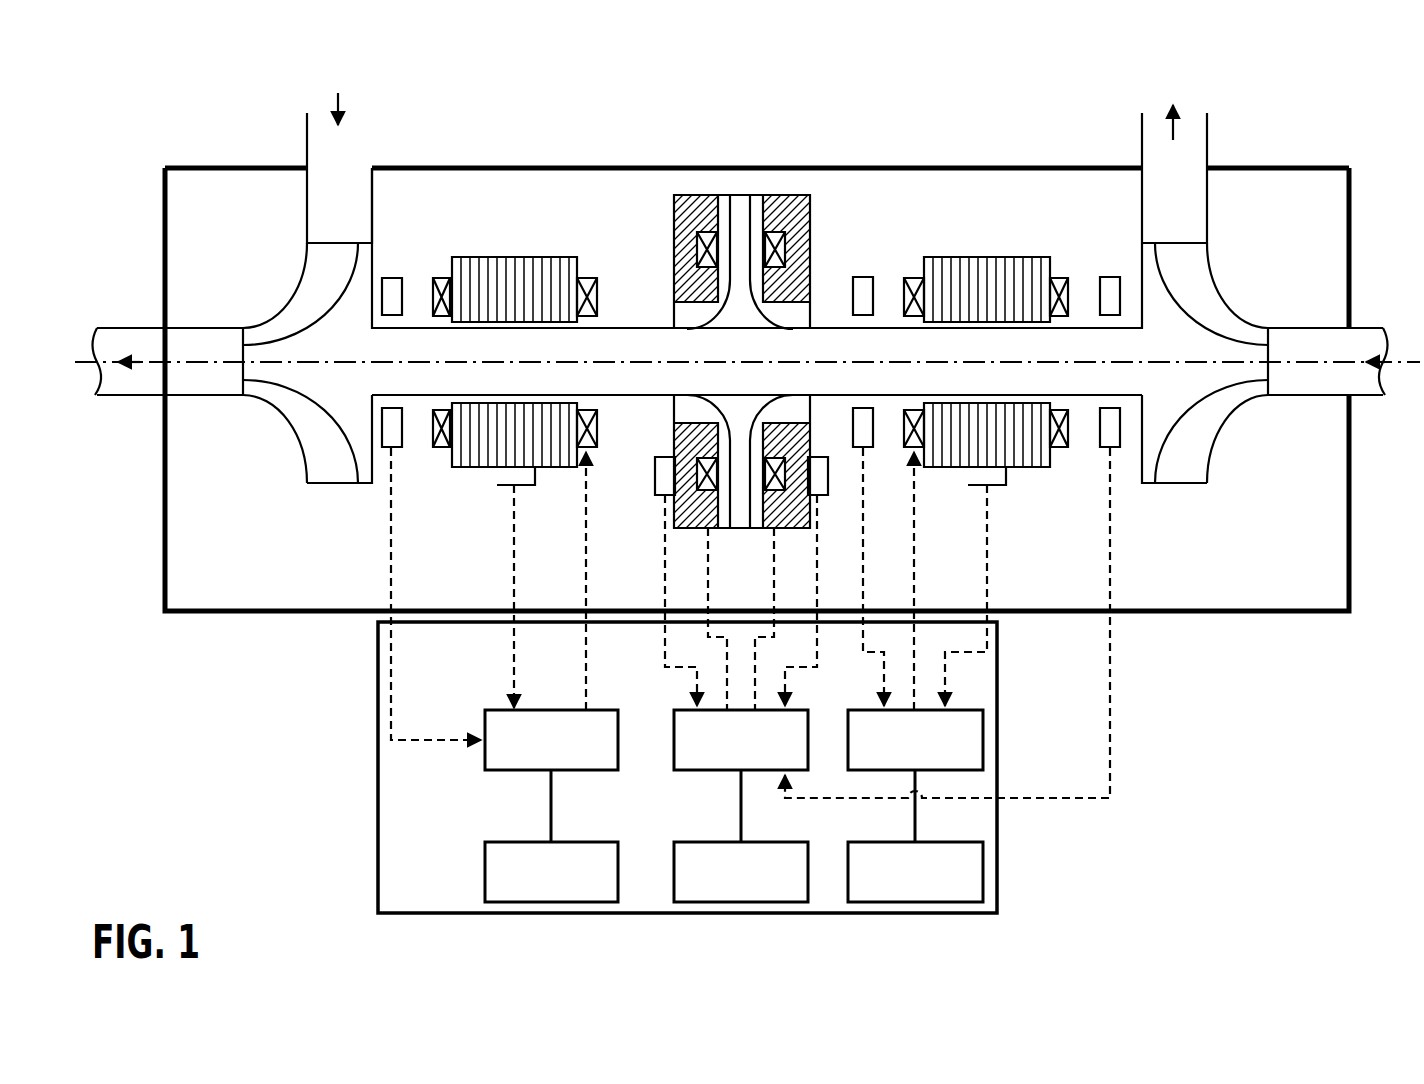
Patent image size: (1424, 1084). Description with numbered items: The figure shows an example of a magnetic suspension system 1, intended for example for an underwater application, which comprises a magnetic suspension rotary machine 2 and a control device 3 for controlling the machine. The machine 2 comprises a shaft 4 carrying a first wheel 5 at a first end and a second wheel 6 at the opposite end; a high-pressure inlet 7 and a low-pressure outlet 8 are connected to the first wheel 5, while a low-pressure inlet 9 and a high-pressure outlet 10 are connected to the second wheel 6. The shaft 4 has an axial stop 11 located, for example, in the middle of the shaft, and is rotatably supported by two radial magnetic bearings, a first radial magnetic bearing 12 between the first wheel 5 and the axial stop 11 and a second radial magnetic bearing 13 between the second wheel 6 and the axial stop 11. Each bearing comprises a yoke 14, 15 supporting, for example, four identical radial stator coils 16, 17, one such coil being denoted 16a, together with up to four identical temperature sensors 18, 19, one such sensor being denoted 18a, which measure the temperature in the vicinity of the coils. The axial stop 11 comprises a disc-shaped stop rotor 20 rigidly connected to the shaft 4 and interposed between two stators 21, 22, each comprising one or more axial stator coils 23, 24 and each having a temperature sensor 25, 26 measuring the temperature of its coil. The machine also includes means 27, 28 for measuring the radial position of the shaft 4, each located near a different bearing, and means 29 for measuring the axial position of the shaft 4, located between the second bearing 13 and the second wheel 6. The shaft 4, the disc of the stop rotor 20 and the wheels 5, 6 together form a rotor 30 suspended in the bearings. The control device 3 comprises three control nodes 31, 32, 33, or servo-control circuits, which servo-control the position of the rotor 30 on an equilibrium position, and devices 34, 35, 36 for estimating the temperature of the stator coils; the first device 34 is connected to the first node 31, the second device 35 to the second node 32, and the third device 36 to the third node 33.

The magnetic suspension system 1 is at (1368, 118).
The magnetic suspension rotary machine 2 is at (497, 163).
The control device 3 is at (371, 742).
The shaft 4 is at (619, 325).
The first wheel 5 is at (267, 286).
The second wheel 6 is at (1241, 286).
The high-pressure inlet 7 is at (303, 139).
The low-pressure outlet 8 is at (130, 324).
The low-pressure inlet 9 is at (1364, 324).
The high-pressure outlet 10 is at (1214, 132).
The axial stop 11 is at (745, 176).
The first radial magnetic bearing 12 is at (514, 441).
The second radial magnetic bearing 13 is at (995, 364).
The yoke 14 is at (508, 253).
The yoke 15 is at (963, 253).
The radial stator coils 16 is at (588, 275).
The coil 16a is at (441, 276).
The radial stator coils 17 is at (1061, 275).
The temperature sensors 18 is at (500, 486).
The sensor 18a is at (522, 486).
The temperature sensors 19 is at (996, 487).
The stop rotor 20 is at (742, 532).
The stator 21 is at (693, 192).
The stator 22 is at (789, 192).
The axial stator coils 23 is at (705, 494).
The axial stator coils 24 is at (777, 494).
The temperature sensor 25 is at (652, 479).
The temperature sensor 26 is at (831, 479).
The means for measuring the radial position 27 is at (392, 276).
The means for measuring the radial position 28 is at (863, 276).
The means for measuring the axial position 29 is at (1097, 441).
The rotor 30 is at (1220, 490).
The first control node 31 is at (490, 710).
The second control node 32 is at (862, 710).
The third control node 33 is at (677, 710).
The first device 34 is at (494, 841).
The second device 35 is at (862, 841).
The third device 36 is at (684, 841).